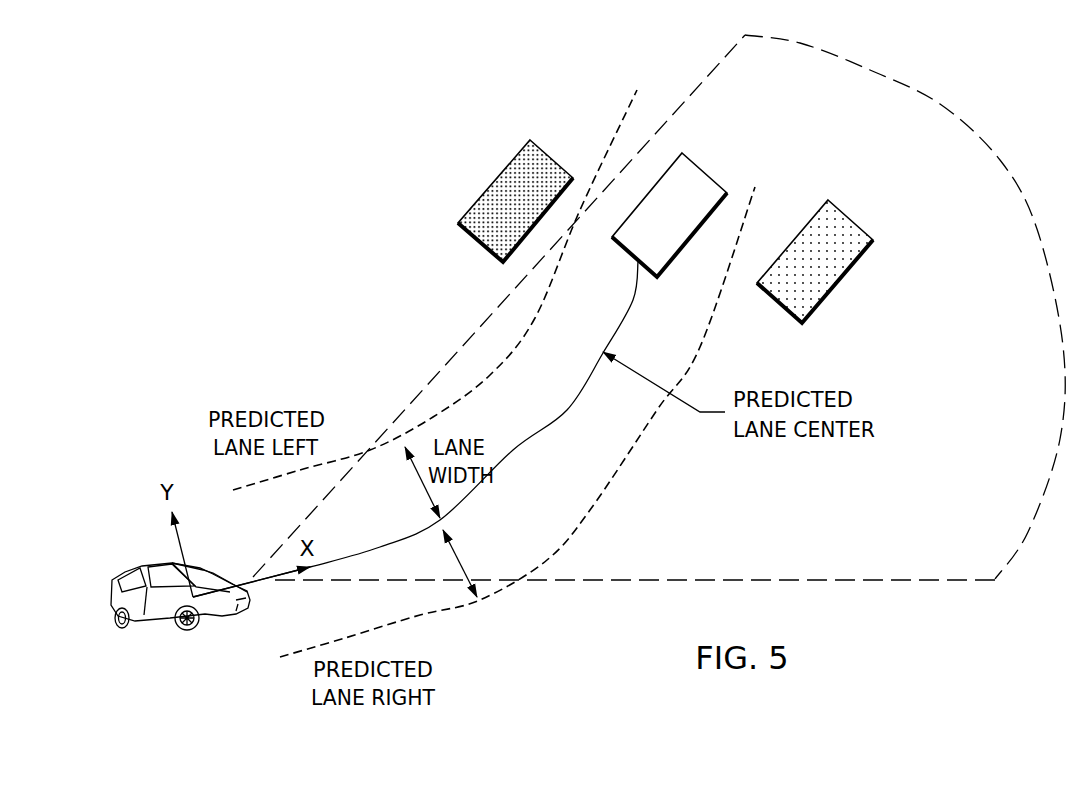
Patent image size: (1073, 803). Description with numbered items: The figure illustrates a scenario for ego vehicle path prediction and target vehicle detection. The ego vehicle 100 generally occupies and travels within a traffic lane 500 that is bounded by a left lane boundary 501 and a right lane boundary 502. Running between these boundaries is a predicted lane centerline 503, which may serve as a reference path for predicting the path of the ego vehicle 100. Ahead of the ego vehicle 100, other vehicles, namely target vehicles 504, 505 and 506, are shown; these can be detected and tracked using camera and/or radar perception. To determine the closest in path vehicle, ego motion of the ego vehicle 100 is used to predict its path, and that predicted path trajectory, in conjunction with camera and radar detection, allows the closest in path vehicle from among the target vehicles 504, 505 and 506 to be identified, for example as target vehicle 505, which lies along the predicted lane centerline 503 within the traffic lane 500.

The traffic lane 500 is at (275, 162).
The ego vehicle 100 is at (192, 632).
The left lane boundary 501 is at (490, 375).
The right lane boundary 502 is at (590, 510).
The predicted lane centerline 503 is at (562, 410).
The target vehicle 504 is at (492, 180).
The target vehicle 505 is at (704, 172).
The target vehicle 506 is at (840, 278).